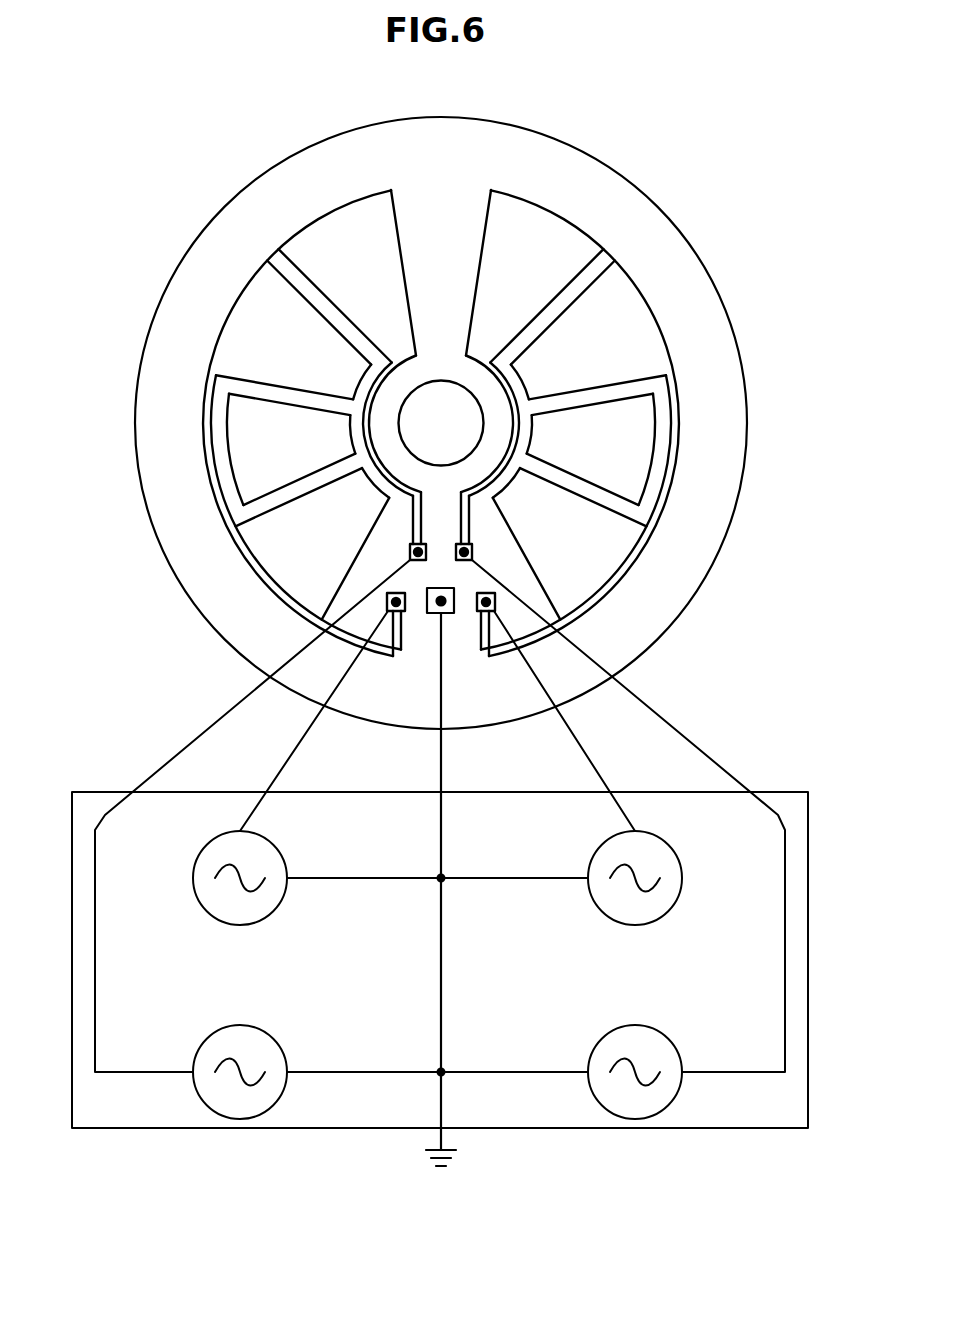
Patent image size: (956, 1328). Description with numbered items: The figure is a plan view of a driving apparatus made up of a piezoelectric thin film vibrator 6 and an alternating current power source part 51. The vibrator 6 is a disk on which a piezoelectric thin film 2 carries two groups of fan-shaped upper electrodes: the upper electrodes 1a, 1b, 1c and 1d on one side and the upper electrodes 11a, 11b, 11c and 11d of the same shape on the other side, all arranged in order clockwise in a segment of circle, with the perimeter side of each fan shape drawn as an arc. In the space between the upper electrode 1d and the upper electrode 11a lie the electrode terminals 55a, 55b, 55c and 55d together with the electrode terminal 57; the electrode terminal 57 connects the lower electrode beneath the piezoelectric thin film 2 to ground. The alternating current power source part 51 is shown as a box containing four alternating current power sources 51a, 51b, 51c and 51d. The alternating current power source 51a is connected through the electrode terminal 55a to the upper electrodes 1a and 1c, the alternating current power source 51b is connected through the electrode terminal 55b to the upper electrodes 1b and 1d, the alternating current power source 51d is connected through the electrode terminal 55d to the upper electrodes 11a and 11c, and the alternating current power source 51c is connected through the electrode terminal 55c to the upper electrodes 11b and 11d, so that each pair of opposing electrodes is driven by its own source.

The piezoelectric thin film vibrator 6 is at (218, 119).
The piezoelectric thin film 2 is at (157, 449).
The upper electrode 1a is at (541, 232).
The upper electrode 1b is at (627, 334).
The upper electrode 1c is at (645, 455).
The upper electrode 1d is at (598, 571).
The upper electrode 11a is at (275, 561).
The upper electrode 11b is at (245, 468).
The upper electrode 11c is at (245, 333).
The upper electrode 11d is at (334, 236).
The electrode terminal 55a is at (472, 554).
The electrode terminal 55b is at (476, 613).
The electrode terminal 55c is at (410, 554).
The electrode terminal 55d is at (407, 613).
The electrode terminal 57 is at (457, 615).
The alternating current power source part 51 is at (780, 792).
The alternating current power source 51a is at (680, 1046).
The alternating current power source 51b is at (680, 852).
The alternating current power source 51c is at (283, 1046).
The alternating current power source 51d is at (283, 852).